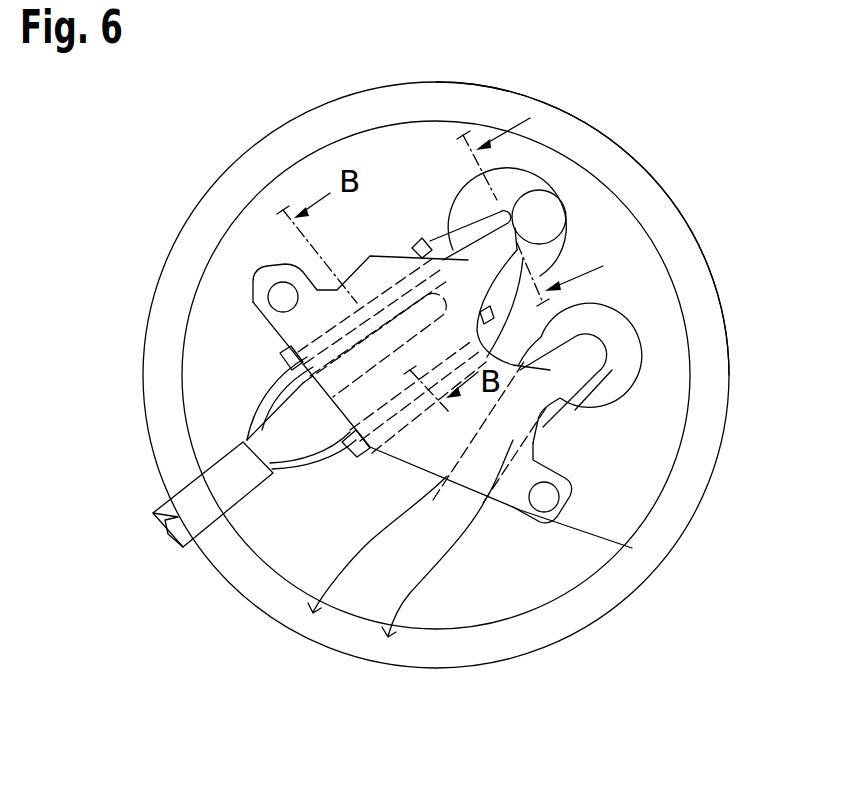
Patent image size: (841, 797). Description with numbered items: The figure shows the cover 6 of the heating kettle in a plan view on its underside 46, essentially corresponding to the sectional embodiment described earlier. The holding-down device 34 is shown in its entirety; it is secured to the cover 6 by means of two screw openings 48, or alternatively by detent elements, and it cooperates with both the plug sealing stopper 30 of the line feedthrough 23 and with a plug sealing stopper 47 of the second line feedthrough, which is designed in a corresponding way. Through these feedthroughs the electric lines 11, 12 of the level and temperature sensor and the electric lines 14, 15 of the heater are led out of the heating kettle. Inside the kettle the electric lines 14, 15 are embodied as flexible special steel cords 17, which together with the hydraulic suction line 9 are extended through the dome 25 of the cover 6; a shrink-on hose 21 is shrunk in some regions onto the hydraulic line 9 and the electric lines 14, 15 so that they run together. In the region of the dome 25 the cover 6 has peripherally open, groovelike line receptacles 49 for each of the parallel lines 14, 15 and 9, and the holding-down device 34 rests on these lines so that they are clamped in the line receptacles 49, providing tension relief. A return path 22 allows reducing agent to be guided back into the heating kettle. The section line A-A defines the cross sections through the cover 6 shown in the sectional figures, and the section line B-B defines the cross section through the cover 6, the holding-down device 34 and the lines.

The cover 6 is at (215, 323).
The hydraulic suction line 9 is at (272, 437).
The electric line 11 is at (423, 580).
The electric line 12 is at (332, 582).
The electric line 14 is at (203, 407).
The electric line 15 is at (273, 537).
The flexible special steel cord 17 is at (260, 395).
The shrink-on hose 21 is at (153, 523).
The return path 22 is at (648, 326).
The line feedthrough 23 is at (551, 170).
The dome 25 is at (390, 233).
The plug sealing stopper 30 is at (512, 188).
The holding-down device 34 is at (547, 222).
The underside 46 is at (670, 433).
The plug sealing stopper 47 is at (620, 368).
The screw opening 48 is at (282, 295).
The line receptacle 49 is at (424, 239).